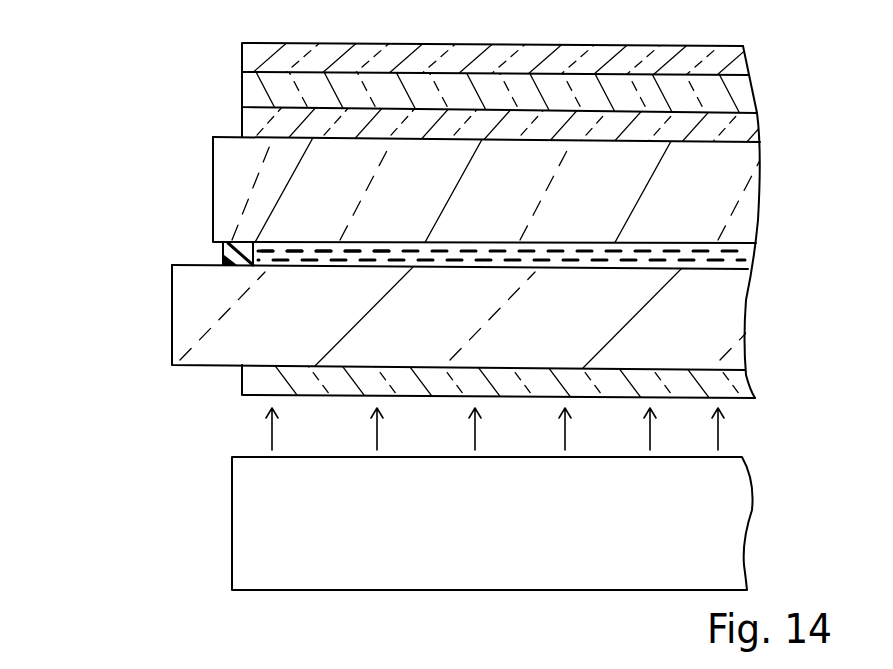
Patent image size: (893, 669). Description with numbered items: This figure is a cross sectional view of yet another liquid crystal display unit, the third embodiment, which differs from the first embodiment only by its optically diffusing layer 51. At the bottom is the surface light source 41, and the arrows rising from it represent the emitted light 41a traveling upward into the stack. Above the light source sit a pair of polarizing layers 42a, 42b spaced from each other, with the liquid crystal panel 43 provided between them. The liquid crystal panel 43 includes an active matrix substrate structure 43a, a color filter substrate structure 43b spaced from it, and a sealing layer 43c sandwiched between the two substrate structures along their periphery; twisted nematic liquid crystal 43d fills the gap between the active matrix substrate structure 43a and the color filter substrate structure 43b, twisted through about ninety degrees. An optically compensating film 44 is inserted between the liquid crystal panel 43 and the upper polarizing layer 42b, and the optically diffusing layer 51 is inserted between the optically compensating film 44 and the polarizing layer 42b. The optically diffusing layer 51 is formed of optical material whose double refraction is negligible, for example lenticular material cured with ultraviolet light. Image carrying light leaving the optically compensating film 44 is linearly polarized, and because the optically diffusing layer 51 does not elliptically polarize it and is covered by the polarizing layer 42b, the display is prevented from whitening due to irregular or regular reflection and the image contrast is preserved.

The surface light source 41 is at (252, 552).
The light emitted from surface light source 41a is at (762, 446).
The polarizing layer 42a is at (250, 384).
The polarizing layer 42b is at (266, 43).
The liquid crystal panel 43 is at (421, 252).
The active matrix substrate structure 43a is at (190, 338).
The color filter substrate structure 43b is at (233, 175).
The sealing layer 43c is at (228, 256).
The twisted nematic liquid crystal 43d is at (320, 250).
The optically compensating film 44 is at (260, 120).
The optically diffusing layer 51 is at (258, 90).